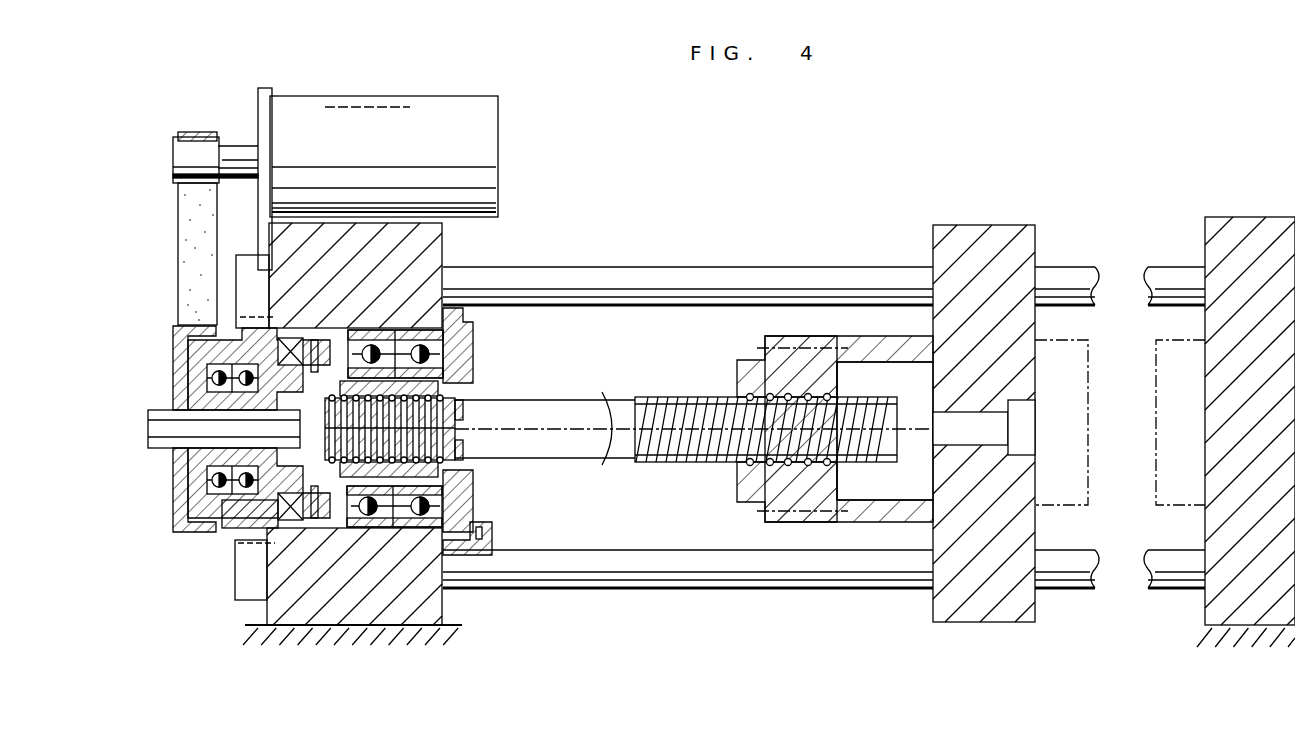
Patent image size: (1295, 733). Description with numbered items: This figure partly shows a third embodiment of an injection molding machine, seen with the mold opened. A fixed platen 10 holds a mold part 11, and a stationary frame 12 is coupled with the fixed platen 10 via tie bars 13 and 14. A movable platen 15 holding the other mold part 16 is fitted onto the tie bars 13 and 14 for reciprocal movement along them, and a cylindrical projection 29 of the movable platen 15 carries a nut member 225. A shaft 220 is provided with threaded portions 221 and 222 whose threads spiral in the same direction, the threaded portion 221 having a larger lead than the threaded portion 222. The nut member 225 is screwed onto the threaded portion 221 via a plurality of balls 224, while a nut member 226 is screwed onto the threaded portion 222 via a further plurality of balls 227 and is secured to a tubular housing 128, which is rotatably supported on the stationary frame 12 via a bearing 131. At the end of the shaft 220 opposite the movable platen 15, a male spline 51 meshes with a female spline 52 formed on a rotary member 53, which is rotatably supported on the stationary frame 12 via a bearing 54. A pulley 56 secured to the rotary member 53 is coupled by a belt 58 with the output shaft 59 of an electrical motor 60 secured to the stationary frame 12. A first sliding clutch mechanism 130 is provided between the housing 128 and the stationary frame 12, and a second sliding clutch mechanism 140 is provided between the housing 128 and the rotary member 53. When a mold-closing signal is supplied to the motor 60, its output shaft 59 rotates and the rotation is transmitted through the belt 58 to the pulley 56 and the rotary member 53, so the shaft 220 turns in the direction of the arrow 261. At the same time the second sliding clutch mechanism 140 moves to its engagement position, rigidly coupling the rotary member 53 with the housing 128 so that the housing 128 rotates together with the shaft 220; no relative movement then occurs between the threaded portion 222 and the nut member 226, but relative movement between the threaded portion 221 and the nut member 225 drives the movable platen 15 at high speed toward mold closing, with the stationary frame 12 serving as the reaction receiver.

The fixed platen 10 is at (1266, 216).
The mold part 11 is at (1153, 408).
The stationary frame 12 is at (440, 250).
The tie bar 13 is at (682, 268).
The tie bar 14 is at (680, 584).
The movable platen 15 is at (1000, 222).
The mold part 16 is at (1086, 400).
The cylindrical projection 29 is at (868, 350).
The male spline 51 is at (166, 410).
The female spline 52 is at (170, 412).
The rotary member 53 is at (175, 474).
The bearing 54 is at (225, 520).
The pulley 56 is at (173, 328).
The belt 58 is at (181, 230).
The output shaft 59 is at (242, 152).
The electrical motor 60 is at (441, 104).
The tubular housing 128 is at (468, 350).
The first sliding clutch mechanism 130 is at (484, 522).
The bearing 131 is at (383, 520).
The second sliding clutch mechanism 140 is at (310, 383).
The shaft 220 is at (565, 398).
The threaded portion 221 is at (683, 398).
The threaded portion 222 is at (455, 413).
The balls 224 is at (735, 466).
The nut member 225 is at (755, 362).
The nut member 226 is at (455, 464).
The spacer 227 is at (442, 471).
The arrow 261 is at (598, 460).